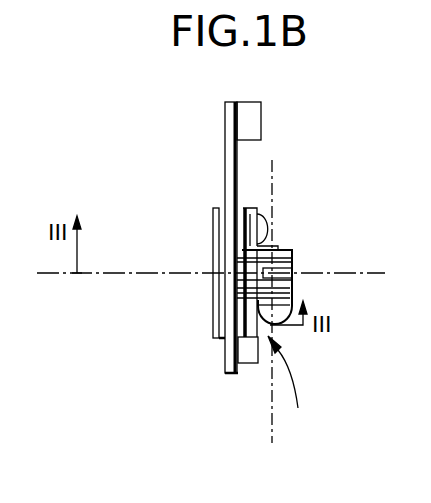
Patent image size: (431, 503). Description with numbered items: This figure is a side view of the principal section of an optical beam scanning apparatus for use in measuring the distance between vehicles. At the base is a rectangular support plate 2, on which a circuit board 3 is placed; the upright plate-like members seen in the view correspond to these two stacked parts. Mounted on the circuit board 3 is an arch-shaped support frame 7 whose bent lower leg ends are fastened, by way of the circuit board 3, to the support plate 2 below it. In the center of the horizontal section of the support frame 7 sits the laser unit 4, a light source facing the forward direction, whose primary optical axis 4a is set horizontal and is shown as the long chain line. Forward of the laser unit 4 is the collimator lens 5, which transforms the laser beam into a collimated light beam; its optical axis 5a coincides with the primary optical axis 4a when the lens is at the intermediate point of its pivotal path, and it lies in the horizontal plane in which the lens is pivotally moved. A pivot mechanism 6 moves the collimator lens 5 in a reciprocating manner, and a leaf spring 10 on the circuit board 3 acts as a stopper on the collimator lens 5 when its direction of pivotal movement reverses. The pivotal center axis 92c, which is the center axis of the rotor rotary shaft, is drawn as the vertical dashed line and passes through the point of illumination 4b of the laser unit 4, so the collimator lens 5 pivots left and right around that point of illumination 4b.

The support plate 2 is at (213, 330).
The circuit board 3 is at (232, 373).
The laser unit 4 is at (293, 284).
The primary optical axis 4a is at (293, 300).
The point of illumination 4b is at (293, 271).
The collimator lens 5 is at (293, 326).
The optical axis of the collimator lens 5a is at (270, 472).
The pivot mechanism 6 is at (290, 382).
The support frame 7 is at (277, 247).
The leaf spring 10 is at (240, 297).
The center axis of the rotor rotary shaft 92c is at (63, 278).